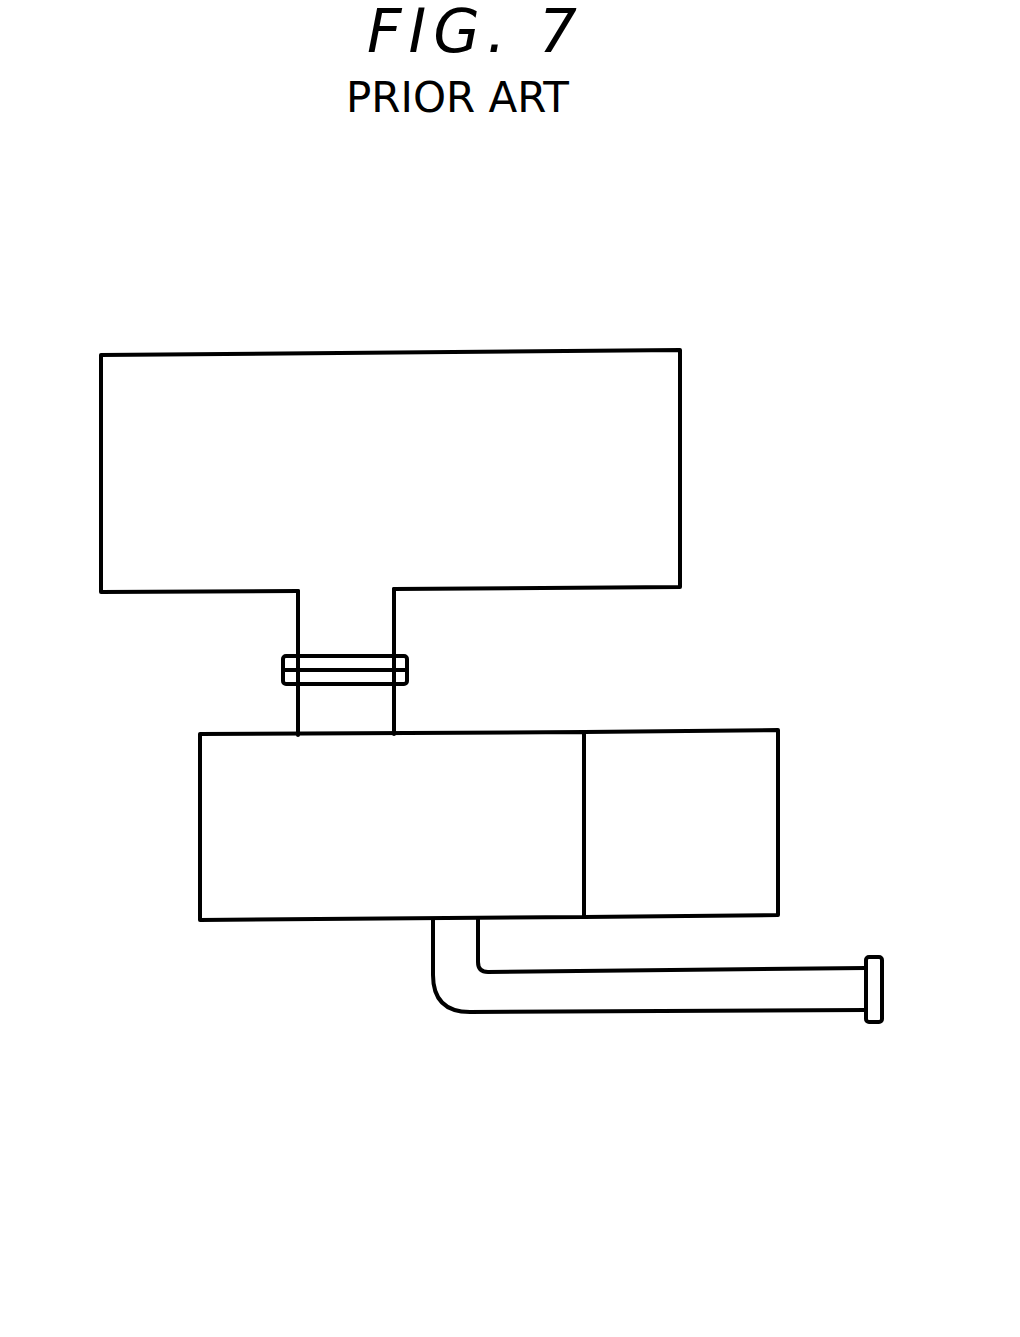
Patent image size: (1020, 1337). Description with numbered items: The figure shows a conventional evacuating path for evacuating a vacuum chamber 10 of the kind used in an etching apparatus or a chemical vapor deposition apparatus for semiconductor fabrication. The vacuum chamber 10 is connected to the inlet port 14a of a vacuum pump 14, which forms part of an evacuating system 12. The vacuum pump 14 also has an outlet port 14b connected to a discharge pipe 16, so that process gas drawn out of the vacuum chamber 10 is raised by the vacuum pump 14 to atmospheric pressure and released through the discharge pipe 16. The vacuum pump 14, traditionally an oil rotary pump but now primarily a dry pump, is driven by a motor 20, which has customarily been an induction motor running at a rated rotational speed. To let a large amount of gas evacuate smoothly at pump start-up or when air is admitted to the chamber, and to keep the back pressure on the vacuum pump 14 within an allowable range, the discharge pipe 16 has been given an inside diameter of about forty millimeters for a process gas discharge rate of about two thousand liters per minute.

The vacuum chamber 10 is at (680, 404).
The evacuating system 12 is at (290, 984).
The vacuum pump 14 is at (200, 835).
The inlet port 14a is at (394, 705).
The outlet port 14b is at (430, 920).
The discharge pipe 16 is at (640, 1012).
The motor 20 is at (742, 730).